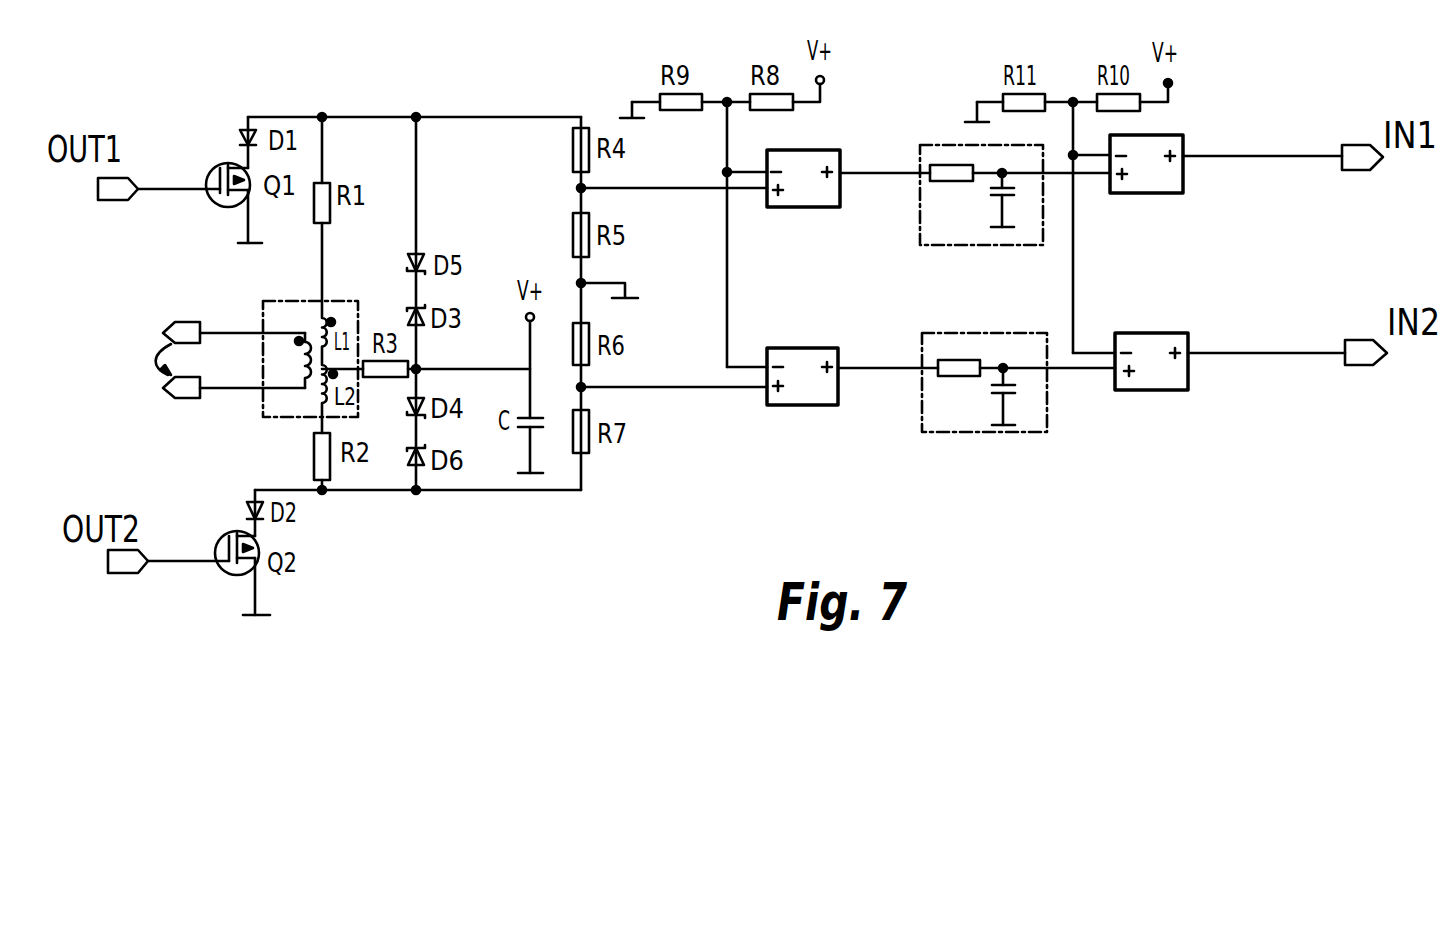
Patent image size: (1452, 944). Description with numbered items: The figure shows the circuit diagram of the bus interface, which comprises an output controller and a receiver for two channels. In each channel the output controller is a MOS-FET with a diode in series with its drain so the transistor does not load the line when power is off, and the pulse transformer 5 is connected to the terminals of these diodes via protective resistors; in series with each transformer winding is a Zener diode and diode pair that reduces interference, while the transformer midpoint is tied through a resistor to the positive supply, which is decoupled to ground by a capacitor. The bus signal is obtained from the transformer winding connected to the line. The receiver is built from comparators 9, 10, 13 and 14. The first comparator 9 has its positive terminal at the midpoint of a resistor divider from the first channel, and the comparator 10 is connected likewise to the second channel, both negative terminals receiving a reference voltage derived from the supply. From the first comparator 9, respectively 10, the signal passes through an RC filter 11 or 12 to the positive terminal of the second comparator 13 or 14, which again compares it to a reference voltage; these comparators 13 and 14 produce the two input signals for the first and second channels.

The pulse transformer 5 is at (262, 302).
The first comparator 9 is at (818, 150).
The comparator 10 is at (812, 348).
The RC filter 11 is at (948, 145).
The RC filter 12 is at (1010, 333).
The second comparator 13 is at (1160, 135).
The second comparator 14 is at (1165, 333).